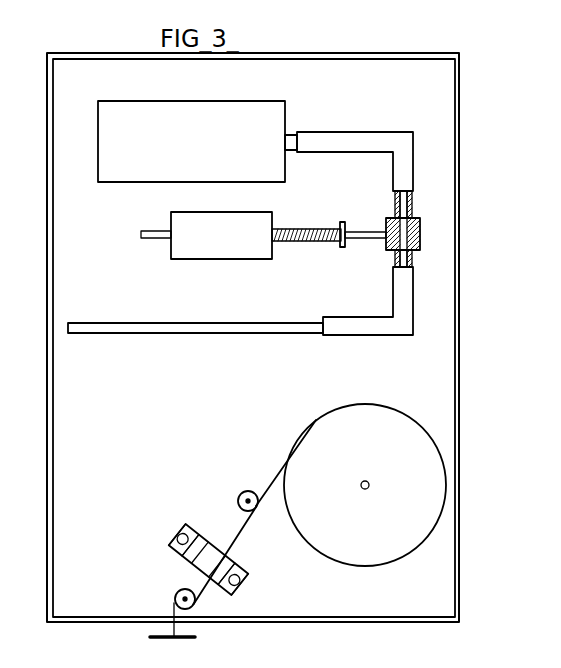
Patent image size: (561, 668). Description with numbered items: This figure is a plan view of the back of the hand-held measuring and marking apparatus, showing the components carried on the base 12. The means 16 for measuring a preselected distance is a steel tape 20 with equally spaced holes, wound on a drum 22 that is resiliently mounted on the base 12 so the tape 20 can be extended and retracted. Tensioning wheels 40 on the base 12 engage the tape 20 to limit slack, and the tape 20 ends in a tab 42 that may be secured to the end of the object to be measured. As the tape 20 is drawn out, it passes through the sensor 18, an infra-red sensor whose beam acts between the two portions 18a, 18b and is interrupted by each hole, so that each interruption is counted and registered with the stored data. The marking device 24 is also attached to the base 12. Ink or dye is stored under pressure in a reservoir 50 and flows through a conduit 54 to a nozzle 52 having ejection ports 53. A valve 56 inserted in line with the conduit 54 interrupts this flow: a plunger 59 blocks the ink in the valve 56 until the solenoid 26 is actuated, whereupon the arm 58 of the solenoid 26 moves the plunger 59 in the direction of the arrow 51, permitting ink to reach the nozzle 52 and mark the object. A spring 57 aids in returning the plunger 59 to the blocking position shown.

The base 12 is at (372, 54).
The means for measuring preselected distance 16 is at (314, 579).
The sensor 18 is at (172, 538).
The sensor portion 18a is at (185, 565).
The sensor portion 18b is at (243, 545).
The tape 20 is at (275, 478).
The drum 22 is at (414, 420).
The marking device 24 is at (420, 305).
The solenoid 26 is at (181, 260).
The wheels 40 is at (241, 491).
The tab 42 is at (195, 637).
The reservoir 50 is at (208, 101).
The arrow 51 is at (207, 274).
The nozzle 52 is at (158, 323).
The ejection ports 53 is at (242, 335).
The conduit 54 is at (344, 131).
The valve 56 is at (420, 222).
The spring 57 is at (316, 212).
The arm 58 is at (344, 221).
The plunger 59 is at (421, 240).